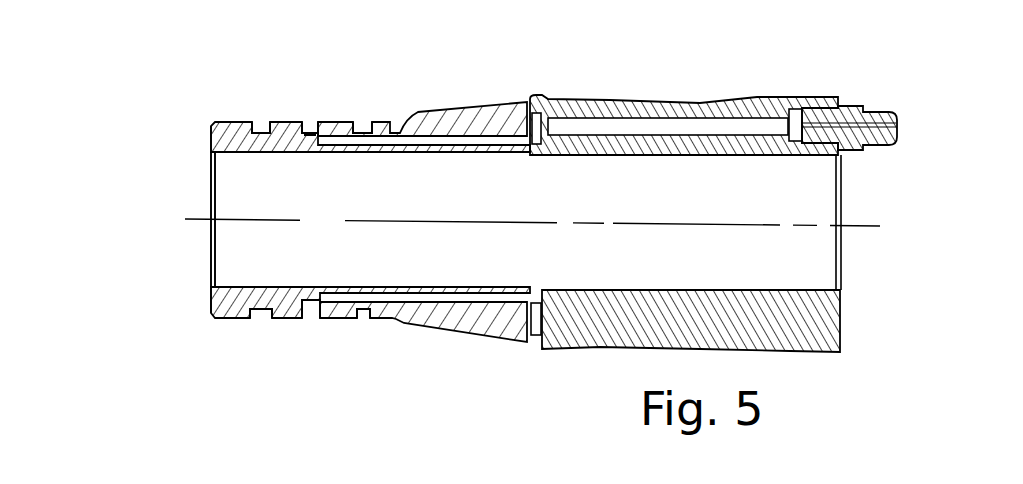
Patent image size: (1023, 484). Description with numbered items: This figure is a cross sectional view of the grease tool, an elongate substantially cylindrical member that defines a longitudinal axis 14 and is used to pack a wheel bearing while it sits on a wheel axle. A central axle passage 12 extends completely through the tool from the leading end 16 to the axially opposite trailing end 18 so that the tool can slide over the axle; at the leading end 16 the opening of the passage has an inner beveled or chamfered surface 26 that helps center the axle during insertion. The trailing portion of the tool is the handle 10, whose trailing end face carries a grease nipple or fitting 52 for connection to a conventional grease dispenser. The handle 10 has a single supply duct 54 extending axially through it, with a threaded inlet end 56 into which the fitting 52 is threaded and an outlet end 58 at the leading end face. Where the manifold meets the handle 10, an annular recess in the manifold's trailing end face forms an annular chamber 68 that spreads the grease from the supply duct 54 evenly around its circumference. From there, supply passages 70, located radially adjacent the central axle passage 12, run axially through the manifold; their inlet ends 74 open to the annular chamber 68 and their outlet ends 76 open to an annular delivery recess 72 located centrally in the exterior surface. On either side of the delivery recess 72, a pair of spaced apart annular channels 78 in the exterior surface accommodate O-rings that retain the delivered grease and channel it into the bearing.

The handle 10 is at (819, 381).
The central axle passage 12 is at (864, 198).
The longitudinal axis 14 is at (863, 226).
The leading end 16 is at (191, 313).
The trailing end 18 is at (869, 326).
The inner beveled or chamfered surface 26 is at (212, 152).
The grease nipple or fitting 52 is at (866, 108).
The supply duct 54 is at (698, 120).
The inlet end 56 is at (795, 110).
The outlet end 58 is at (542, 128).
The annular chamber 68 is at (529, 338).
The supply passages 70 is at (398, 128).
The annular delivery recess 72 is at (308, 334).
The inlet ends 74 is at (512, 126).
The outlet ends 76 is at (312, 133).
The annular channels 78 is at (262, 334).